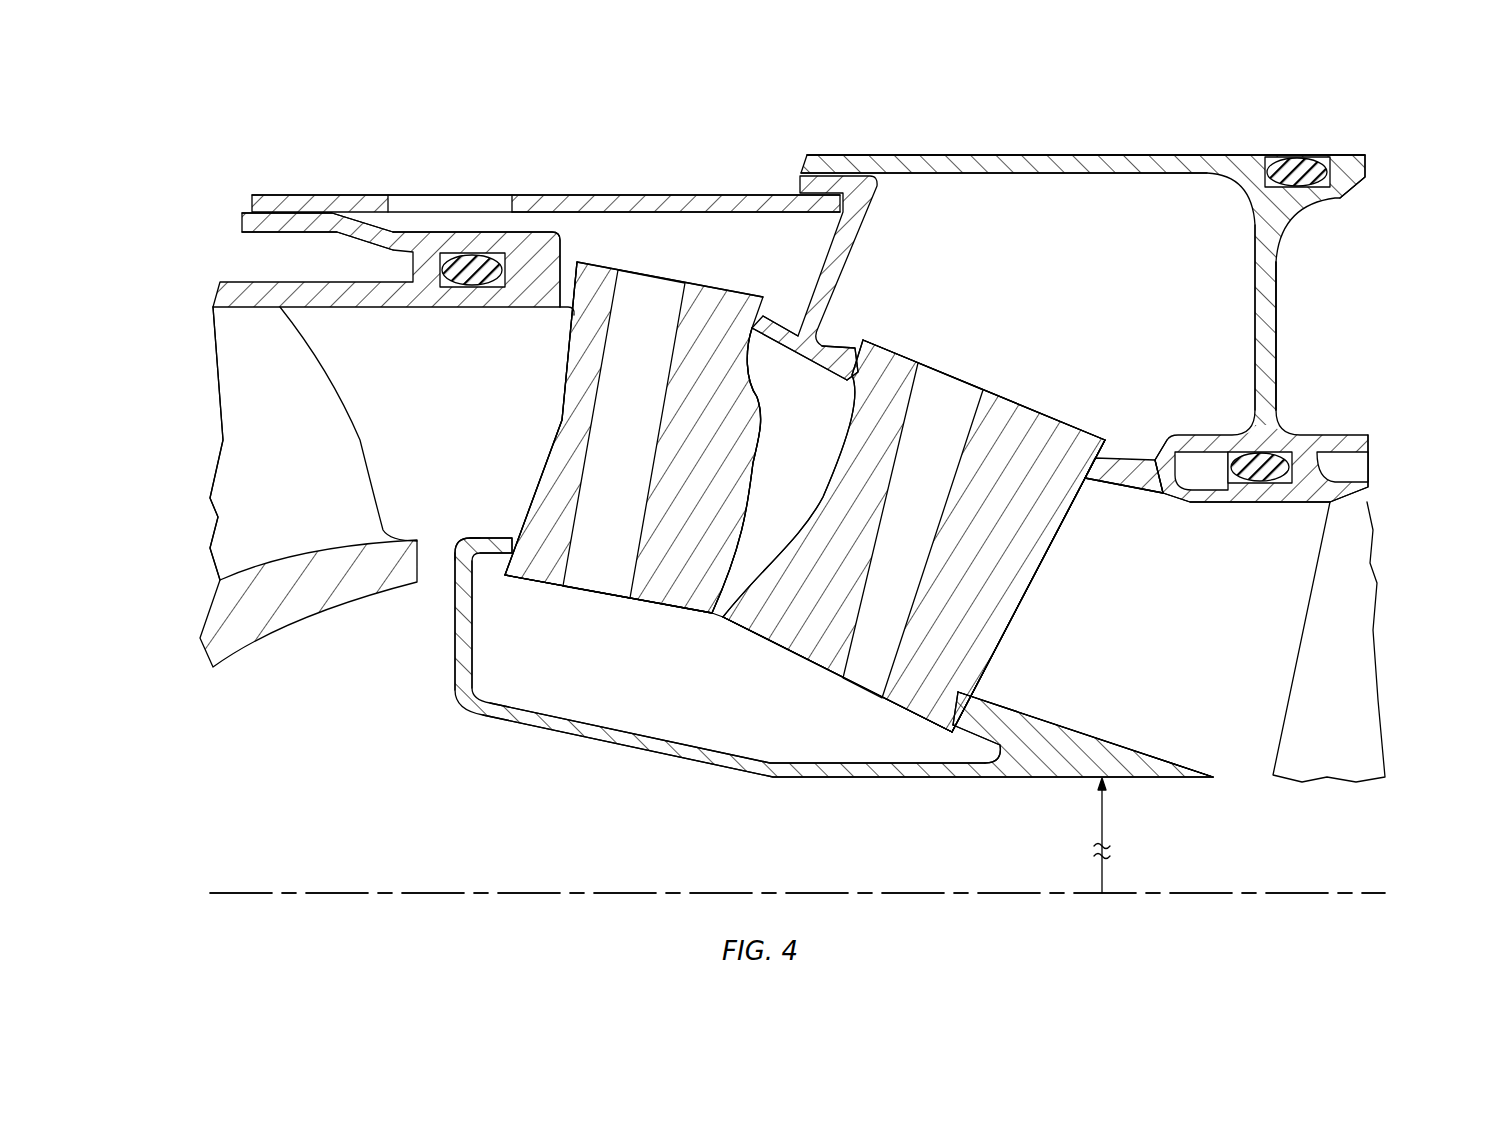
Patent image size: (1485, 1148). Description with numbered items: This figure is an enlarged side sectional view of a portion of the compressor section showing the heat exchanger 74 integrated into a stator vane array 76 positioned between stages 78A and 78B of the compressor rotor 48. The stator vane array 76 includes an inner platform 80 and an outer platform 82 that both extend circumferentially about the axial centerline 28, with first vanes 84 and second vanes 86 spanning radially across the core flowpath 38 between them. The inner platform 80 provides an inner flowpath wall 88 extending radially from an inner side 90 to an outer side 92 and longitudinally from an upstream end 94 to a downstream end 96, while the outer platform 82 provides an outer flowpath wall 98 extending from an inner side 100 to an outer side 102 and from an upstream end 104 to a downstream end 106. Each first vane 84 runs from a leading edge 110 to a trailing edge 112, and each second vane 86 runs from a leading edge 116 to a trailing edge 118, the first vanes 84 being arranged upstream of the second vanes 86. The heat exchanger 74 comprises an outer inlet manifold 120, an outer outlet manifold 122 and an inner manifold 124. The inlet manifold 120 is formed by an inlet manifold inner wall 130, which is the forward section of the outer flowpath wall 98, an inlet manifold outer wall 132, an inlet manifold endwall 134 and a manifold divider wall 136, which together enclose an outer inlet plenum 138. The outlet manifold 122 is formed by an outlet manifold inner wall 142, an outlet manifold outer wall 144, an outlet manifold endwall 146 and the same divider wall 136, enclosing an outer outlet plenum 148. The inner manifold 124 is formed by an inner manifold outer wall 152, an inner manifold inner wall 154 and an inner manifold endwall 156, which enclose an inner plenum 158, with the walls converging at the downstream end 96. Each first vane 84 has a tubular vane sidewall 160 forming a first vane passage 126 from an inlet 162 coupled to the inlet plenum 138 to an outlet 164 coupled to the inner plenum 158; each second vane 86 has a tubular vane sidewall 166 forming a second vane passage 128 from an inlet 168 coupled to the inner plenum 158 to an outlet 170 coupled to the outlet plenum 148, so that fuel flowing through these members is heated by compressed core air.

The axial centerline 28 is at (228, 893).
The core flowpath 38 is at (400, 406).
The compressor rotor 48 is at (198, 638).
The heat exchanger 74 is at (1203, 113).
The stator vane array 76 is at (1090, 613).
The stage 78A is at (220, 430).
The stage 78B is at (1380, 660).
The inner platform 80 is at (1095, 745).
The outer platform 82 is at (1148, 505).
The first vane 84 is at (556, 428).
The second vane 86 is at (1022, 625).
The inner flowpath wall 88 is at (1036, 723).
The inner side 90 is at (962, 740).
The outer side 92 is at (995, 703).
The upstream end 94 is at (462, 542).
The downstream end 96 is at (1216, 777).
The outer flowpath wall 98 is at (1128, 488).
The inner side 100 is at (1077, 497).
The outer side 102 is at (1130, 452).
The upstream end 104 is at (545, 320).
The downstream end 106 is at (1173, 493).
The leading edge 110 is at (570, 378).
The trailing edge 112 is at (758, 397).
The leading edge 116 is at (787, 472).
The trailing edge 118 is at (1052, 568).
The outer inlet manifold 120 is at (697, 190).
The outer outlet manifold 122 is at (1112, 148).
The inner manifold 124 is at (610, 756).
The first vane passage 126 is at (612, 396).
The second vane passage 128 is at (875, 498).
The inlet manifold inner wall 130 is at (782, 320).
The inlet manifold outer wall 132 is at (635, 192).
The inlet manifold endwall 134 is at (380, 242).
The manifold divider wall 136 is at (848, 268).
The outer inlet plenum 138 is at (680, 252).
The outlet manifold inner wall 142 is at (832, 343).
The outlet manifold outer wall 144 is at (1078, 150).
The outlet manifold endwall 146 is at (1280, 333).
The outer outlet plenum 148 is at (1073, 291).
The inner manifold outer wall 152 is at (500, 537).
The inner manifold inner wall 154 is at (540, 728).
The inner manifold endwall 156 is at (455, 620).
The inner plenum 158 is at (640, 706).
The tubular vane sidewall 160 is at (674, 582).
The inlet 162 is at (662, 270).
The outlet 164 is at (586, 598).
The tubular vane sidewall 166 is at (880, 675).
The inlet 168 is at (796, 655).
The outlet 170 is at (963, 382).